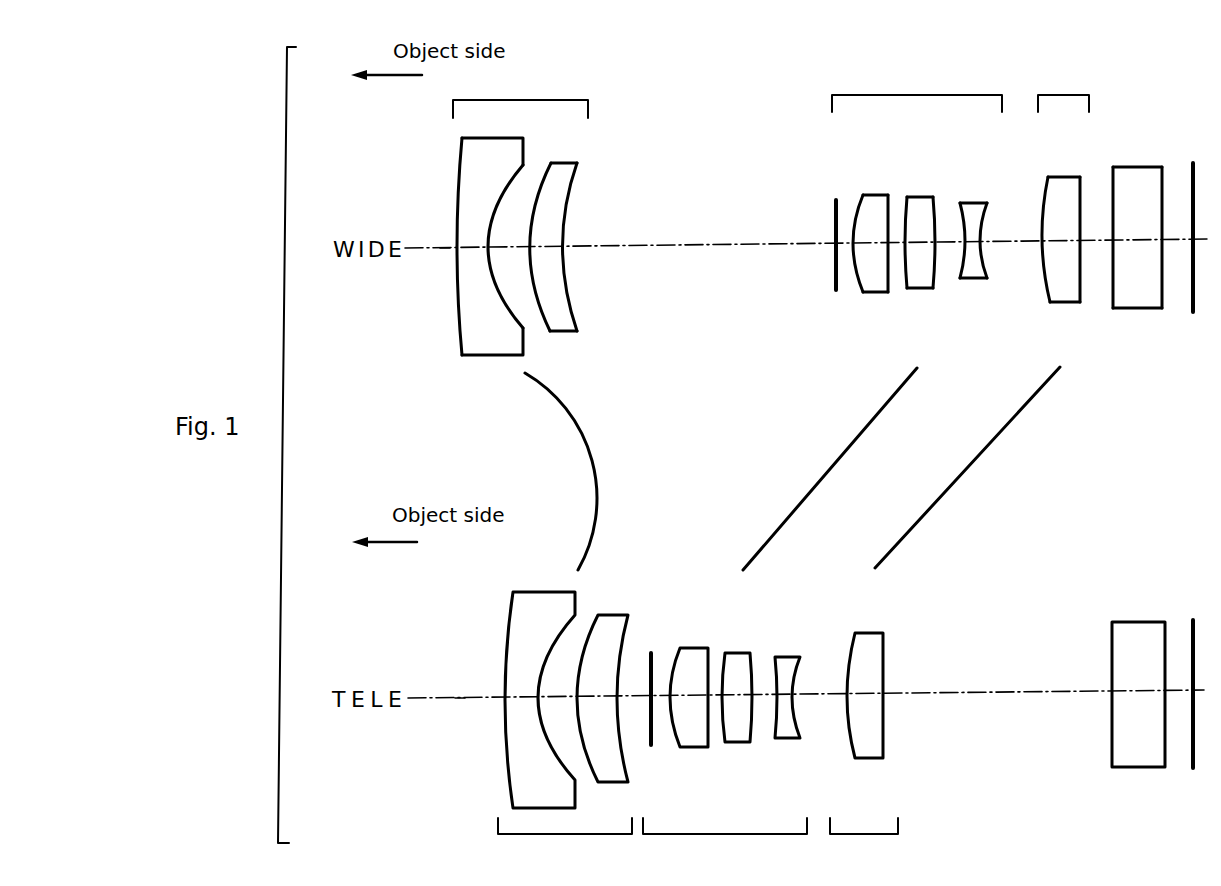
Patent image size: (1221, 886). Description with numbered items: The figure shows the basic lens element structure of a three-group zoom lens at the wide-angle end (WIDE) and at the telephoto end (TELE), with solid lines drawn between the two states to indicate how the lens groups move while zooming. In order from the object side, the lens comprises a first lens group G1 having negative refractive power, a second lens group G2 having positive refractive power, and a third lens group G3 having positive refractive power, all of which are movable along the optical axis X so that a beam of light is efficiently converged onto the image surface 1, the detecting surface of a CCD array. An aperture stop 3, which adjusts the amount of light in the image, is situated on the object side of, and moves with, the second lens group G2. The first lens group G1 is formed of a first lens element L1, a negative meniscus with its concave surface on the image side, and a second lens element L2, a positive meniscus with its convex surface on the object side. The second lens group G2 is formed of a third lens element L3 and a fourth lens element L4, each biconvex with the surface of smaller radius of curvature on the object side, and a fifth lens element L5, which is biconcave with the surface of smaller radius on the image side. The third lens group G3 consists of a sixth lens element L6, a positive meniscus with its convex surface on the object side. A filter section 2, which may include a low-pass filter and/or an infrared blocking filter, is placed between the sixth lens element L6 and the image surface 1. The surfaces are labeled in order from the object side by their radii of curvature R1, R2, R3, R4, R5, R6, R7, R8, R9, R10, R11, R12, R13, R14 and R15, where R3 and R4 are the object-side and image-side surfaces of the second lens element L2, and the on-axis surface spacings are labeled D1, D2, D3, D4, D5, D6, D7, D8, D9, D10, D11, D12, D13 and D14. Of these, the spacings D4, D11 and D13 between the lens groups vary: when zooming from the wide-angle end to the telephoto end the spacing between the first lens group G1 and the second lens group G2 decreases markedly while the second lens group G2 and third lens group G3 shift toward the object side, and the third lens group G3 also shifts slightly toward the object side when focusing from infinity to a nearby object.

The image surface 1 is at (1193, 165).
The filter section 2 is at (1138, 167).
The aperture stop 3 is at (834, 205).
The optical axis X is at (443, 252).
The first lens group G1 is at (542, 473).
The second lens group G2 is at (822, 469).
The third lens group G3 is at (959, 467).
The first lens element L1 is at (497, 143).
The second lens element L2 is at (569, 163).
The third lens element L3 is at (875, 195).
The fourth lens element L4 is at (924, 197).
The fifth lens element L5 is at (975, 203).
The sixth lens element L6 is at (1066, 177).
The radius of curvature of surface 1 R1 is at (460, 168).
The radius of curvature of surface 2 R2 is at (507, 180).
The radius of curvature of the object-side surface of the second lens element R3 is at (547, 170).
The radius of curvature of the image-side surface of the second lens element R4 is at (580, 185).
The radius of curvature of surface 5 R5 is at (836, 272).
The radius of curvature of surface 6 R6 is at (858, 200).
The radius of curvature of surface 7 R7 is at (889, 200).
The radius of curvature of surface 8 R8 is at (906, 285).
The radius of curvature of surface 9 R9 is at (936, 278).
The radius of curvature of surface 10 R10 is at (960, 200).
The radius of curvature of surface 11 R11 is at (990, 205).
The radius of curvature of surface 12 R12 is at (1046, 185).
The radius of curvature of surface 13 R13 is at (1081, 185).
The radius of curvature of surface 14 R14 is at (1112, 175).
The radius of curvature of surface 15 R15 is at (1163, 172).
The on-axis surface spacing 1 D1 is at (482, 246).
The on-axis surface spacing 2 D2 is at (512, 246).
The on-axis surface spacing 3 D3 is at (546, 246).
The on-axis surface spacing 4 D4 is at (645, 246).
The on-axis surface spacing 5 D5 is at (830, 244).
The on-axis surface spacing 6 D6 is at (876, 243).
The on-axis surface spacing 7 D7 is at (922, 242).
The on-axis surface spacing 8 D8 is at (913, 245).
The on-axis surface spacing 9 D9 is at (944, 245).
The on-axis surface spacing 10 D10 is at (985, 240).
The on-axis surface spacing 11 D11 is at (1000, 246).
The on-axis surface spacing 12 D12 is at (1066, 240).
The on-axis surface spacing 13 D13 is at (1082, 246).
The on-axis surface spacing 14 D14 is at (1138, 239).